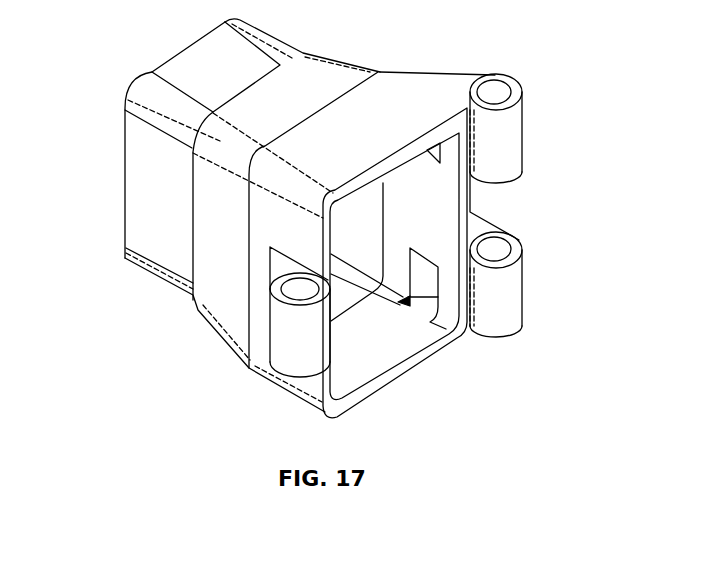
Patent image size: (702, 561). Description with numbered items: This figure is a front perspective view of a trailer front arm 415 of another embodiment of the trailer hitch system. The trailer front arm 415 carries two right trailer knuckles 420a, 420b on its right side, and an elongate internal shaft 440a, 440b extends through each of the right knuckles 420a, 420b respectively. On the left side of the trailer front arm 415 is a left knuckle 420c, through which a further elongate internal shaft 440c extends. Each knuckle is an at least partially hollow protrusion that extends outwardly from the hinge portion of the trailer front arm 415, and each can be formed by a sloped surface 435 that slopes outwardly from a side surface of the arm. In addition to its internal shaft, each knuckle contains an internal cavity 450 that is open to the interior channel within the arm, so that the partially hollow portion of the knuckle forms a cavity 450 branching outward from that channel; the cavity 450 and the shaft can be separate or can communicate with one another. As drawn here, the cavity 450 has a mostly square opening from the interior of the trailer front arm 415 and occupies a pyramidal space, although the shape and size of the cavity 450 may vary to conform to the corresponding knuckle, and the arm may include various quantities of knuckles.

The trailer front arm 415 is at (156, 38).
The sloped surface 435 is at (432, 74).
The right trailer knuckle 420a is at (505, 142).
The elongate internal shaft 440a is at (493, 90).
The right trailer knuckle 420b is at (505, 298).
The elongate internal shaft 440b is at (493, 247).
The left knuckle 420c is at (290, 360).
The elongate internal shaft 440c is at (300, 293).
The internal cavity 450 is at (416, 302).